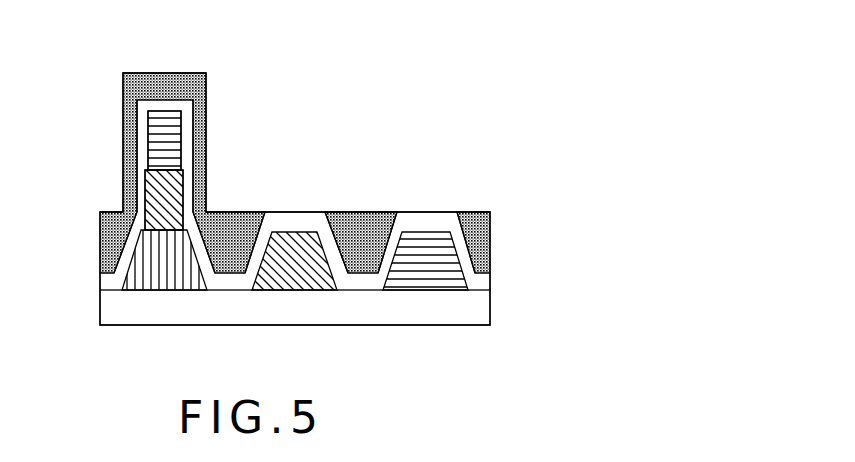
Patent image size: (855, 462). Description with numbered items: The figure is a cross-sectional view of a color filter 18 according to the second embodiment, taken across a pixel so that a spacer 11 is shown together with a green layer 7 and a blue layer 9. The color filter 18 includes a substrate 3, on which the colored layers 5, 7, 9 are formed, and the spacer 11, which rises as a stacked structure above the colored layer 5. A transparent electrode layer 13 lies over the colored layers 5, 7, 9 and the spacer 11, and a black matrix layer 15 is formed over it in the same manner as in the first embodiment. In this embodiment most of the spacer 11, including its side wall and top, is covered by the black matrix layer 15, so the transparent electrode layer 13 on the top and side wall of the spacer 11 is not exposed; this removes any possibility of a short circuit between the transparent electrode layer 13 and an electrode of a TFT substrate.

The substrate 3 is at (108, 312).
The colored layer 5 is at (162, 280).
The green layer 7 is at (176, 188).
The blue layer 9 is at (176, 128).
The spacer 11 is at (123, 110).
The transparent electrode layer 13 is at (430, 213).
The black matrix layer 15 is at (167, 84).
The color filter 18 is at (453, 123).